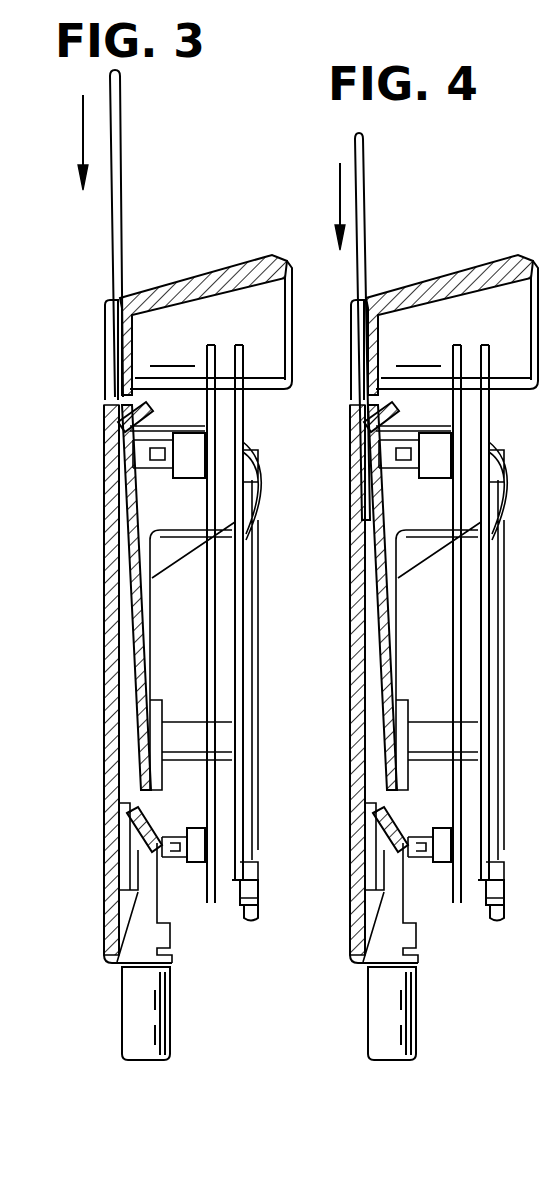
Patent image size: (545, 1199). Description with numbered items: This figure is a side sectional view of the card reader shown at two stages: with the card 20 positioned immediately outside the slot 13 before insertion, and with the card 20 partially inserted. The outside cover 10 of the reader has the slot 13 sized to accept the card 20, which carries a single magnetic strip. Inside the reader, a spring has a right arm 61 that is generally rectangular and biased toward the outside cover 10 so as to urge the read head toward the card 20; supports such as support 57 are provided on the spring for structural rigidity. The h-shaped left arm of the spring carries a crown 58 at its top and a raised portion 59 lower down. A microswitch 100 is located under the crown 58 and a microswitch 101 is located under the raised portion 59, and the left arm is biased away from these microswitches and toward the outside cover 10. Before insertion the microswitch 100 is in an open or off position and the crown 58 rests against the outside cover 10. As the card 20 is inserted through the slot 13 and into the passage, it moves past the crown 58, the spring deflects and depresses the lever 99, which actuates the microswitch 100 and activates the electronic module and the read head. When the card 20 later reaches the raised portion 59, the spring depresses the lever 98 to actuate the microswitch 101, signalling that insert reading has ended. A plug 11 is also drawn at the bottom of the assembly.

In FIG. 3, the outside cover 10 is at (179, 292).
In FIG. 4, the outside cover 10 is at (444, 314).
In FIG. 3, the plug 11 is at (135, 1012).
In FIG. 4, the plug 11 is at (374, 1018).
In FIG. 3, the slot 13 is at (114, 410).
In FIG. 3, the card 20 is at (123, 192).
In FIG. 4, the card 20 is at (368, 215).
In FIG. 3, the support 57 is at (156, 556).
In FIG. 4, the support 57 is at (399, 597).
In FIG. 3, the crown 58 is at (112, 472).
In FIG. 4, the crown 58 is at (368, 684).
In FIG. 3, the raised portion 59 is at (118, 832).
In FIG. 4, the raised portion 59 is at (359, 883).
In FIG. 3, the right arm 61 is at (152, 604).
In FIG. 4, the right arm 61 is at (467, 651).
In FIG. 3, the lever 98 is at (150, 880).
In FIG. 4, the lever 98 is at (382, 880).
In FIG. 3, the lever 99 is at (150, 406).
In FIG. 4, the lever 99 is at (470, 633).
In FIG. 3, the microswitch 100 is at (168, 418).
In FIG. 4, the microswitch 100 is at (460, 443).
In FIG. 3, the microswitch 101 is at (200, 868).
In FIG. 4, the microswitch 101 is at (472, 908).